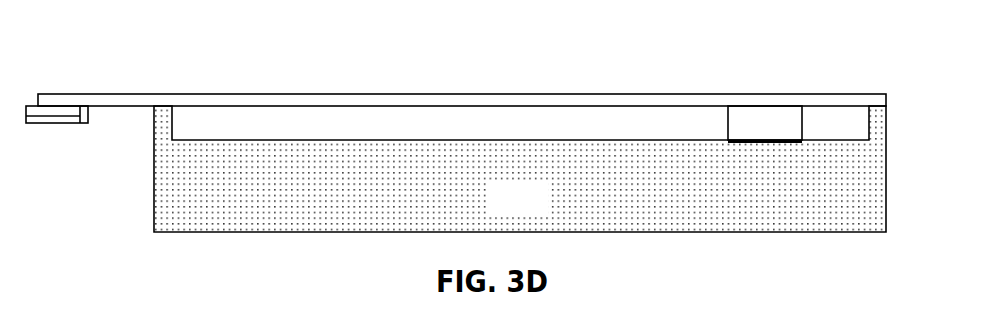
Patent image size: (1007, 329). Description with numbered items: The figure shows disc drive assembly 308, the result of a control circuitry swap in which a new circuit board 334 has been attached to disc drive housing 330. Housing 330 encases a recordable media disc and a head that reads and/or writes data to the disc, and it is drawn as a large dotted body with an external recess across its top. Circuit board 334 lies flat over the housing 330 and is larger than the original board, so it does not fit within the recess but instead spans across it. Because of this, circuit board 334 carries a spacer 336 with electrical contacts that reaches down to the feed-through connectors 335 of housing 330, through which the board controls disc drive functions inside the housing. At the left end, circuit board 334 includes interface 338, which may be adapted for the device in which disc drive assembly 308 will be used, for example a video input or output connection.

The disc drive assembly 308 is at (62, 69).
The disc drive housing 330 is at (536, 208).
The circuit board 334 is at (511, 93).
The feed-through connectors 335 is at (730, 141).
The spacer 336 is at (779, 134).
The interface 338 is at (45, 123).